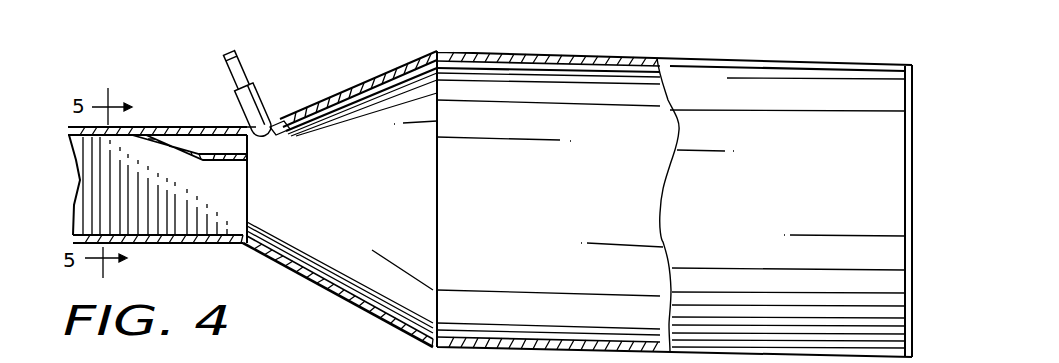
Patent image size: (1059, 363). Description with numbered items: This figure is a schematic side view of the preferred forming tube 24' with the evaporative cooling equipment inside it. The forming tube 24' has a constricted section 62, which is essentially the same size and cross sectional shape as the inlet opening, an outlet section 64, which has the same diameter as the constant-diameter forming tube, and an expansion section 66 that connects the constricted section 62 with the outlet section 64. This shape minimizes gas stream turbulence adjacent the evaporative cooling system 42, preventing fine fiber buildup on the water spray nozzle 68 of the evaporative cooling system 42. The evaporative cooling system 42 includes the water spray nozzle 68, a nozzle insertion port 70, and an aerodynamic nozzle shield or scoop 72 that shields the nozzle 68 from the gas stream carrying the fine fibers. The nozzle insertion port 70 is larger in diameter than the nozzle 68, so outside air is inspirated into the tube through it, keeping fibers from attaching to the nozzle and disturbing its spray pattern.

The forming tube 24' is at (674, 183).
The evaporative cooling system 42 is at (313, 86).
The constricted section 62 is at (139, 245).
The outlet section 64 is at (704, 98).
The expansion section 66 is at (279, 265).
The water spray nozzle 68 is at (242, 104).
The nozzle insertion port 70 is at (279, 135).
The aerodynamic nozzle shield or scoop 72 is at (198, 168).